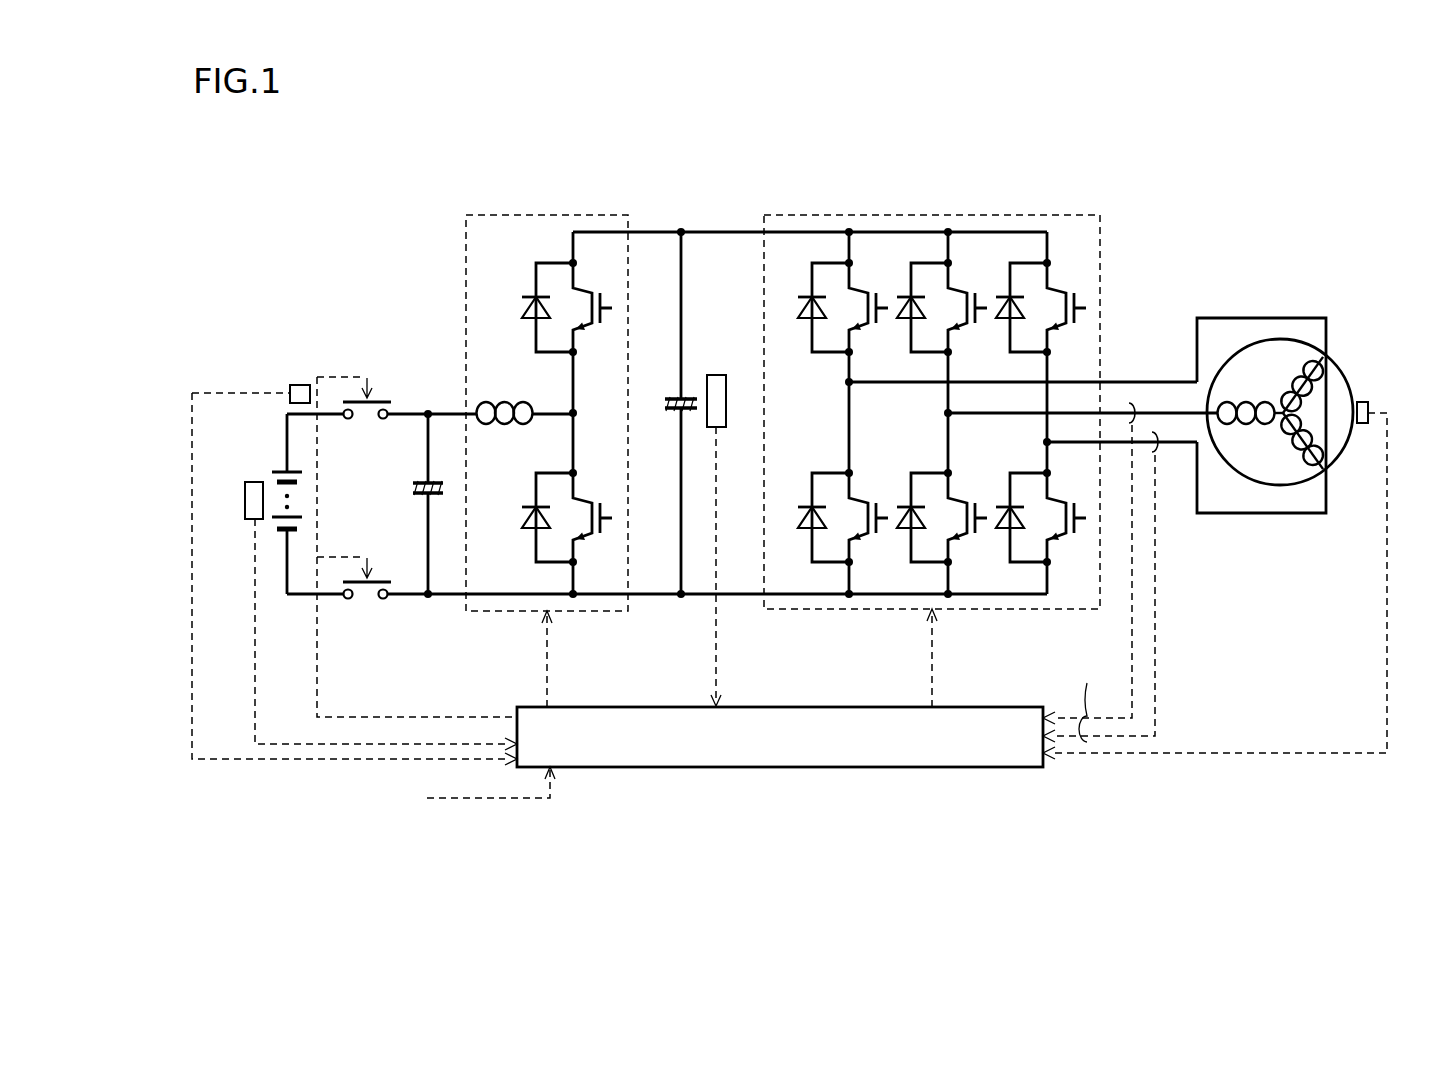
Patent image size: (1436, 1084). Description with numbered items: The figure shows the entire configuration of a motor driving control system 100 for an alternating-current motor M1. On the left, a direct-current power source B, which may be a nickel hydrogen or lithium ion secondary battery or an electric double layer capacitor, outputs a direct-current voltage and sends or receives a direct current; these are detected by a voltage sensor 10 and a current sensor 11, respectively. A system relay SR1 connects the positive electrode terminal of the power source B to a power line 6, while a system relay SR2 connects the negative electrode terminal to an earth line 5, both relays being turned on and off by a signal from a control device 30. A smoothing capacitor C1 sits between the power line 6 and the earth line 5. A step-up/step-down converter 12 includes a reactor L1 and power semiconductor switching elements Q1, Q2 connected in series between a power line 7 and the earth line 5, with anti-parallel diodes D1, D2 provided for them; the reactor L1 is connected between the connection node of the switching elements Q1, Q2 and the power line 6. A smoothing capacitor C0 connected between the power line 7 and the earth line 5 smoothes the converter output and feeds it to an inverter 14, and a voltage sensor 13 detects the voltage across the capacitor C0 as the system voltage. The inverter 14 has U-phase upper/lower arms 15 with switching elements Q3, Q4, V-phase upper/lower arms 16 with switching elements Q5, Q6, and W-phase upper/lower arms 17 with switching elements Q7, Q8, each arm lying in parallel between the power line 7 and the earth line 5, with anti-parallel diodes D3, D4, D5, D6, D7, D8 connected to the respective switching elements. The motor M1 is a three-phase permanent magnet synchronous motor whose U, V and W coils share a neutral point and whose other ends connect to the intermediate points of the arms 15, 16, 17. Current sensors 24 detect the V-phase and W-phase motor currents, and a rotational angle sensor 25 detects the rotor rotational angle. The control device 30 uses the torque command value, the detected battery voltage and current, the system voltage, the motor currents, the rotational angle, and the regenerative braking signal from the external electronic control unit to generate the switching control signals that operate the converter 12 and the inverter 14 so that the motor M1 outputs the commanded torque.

The motor driving control system 100 is at (749, 142).
The direct-current power source B is at (283, 470).
The voltage sensor 10 is at (249, 482).
The current sensor 11 is at (301, 385).
The system relay SR1 is at (381, 400).
The system relay SR2 is at (381, 580).
The power line 6 is at (436, 412).
The smoothing capacitor C1 is at (421, 483).
The earth line 5 is at (658, 596).
The power line 7 is at (715, 231).
The step-up/step-down converter 12 is at (551, 214).
The reactor L1 is at (499, 402).
The power semiconductor switching element Q1 is at (590, 307).
The power semiconductor switching element Q2 is at (590, 517).
The anti-parallel diode D1 is at (533, 307).
The anti-parallel diode D2 is at (533, 517).
The smoothing capacitor C0 is at (672, 399).
The voltage sensor 13 is at (716, 375).
The inverter 14 is at (927, 214).
The U-phase upper/lower arms 15 is at (834, 391).
The V-phase upper/lower arms 16 is at (936, 421).
The W-phase upper/lower arms 17 is at (1034, 449).
The switching element Q3 is at (866, 307).
The switching element Q4 is at (866, 517).
The switching element Q5 is at (965, 307).
The switching element Q6 is at (965, 517).
The switching element Q7 is at (1064, 307).
The switching element Q8 is at (1064, 517).
The anti-parallel diode D3 is at (813, 307).
The anti-parallel diode D4 is at (813, 517).
The anti-parallel diode D5 is at (912, 307).
The anti-parallel diode D6 is at (912, 517).
The anti-parallel diode D7 is at (1011, 307).
The anti-parallel diode D8 is at (1011, 517).
The alternating-current motor M1 is at (1345, 378).
The current sensors 24 is at (1131, 403).
The rotational angle sensor 25 is at (1372, 403).
The control device 30 is at (842, 706).